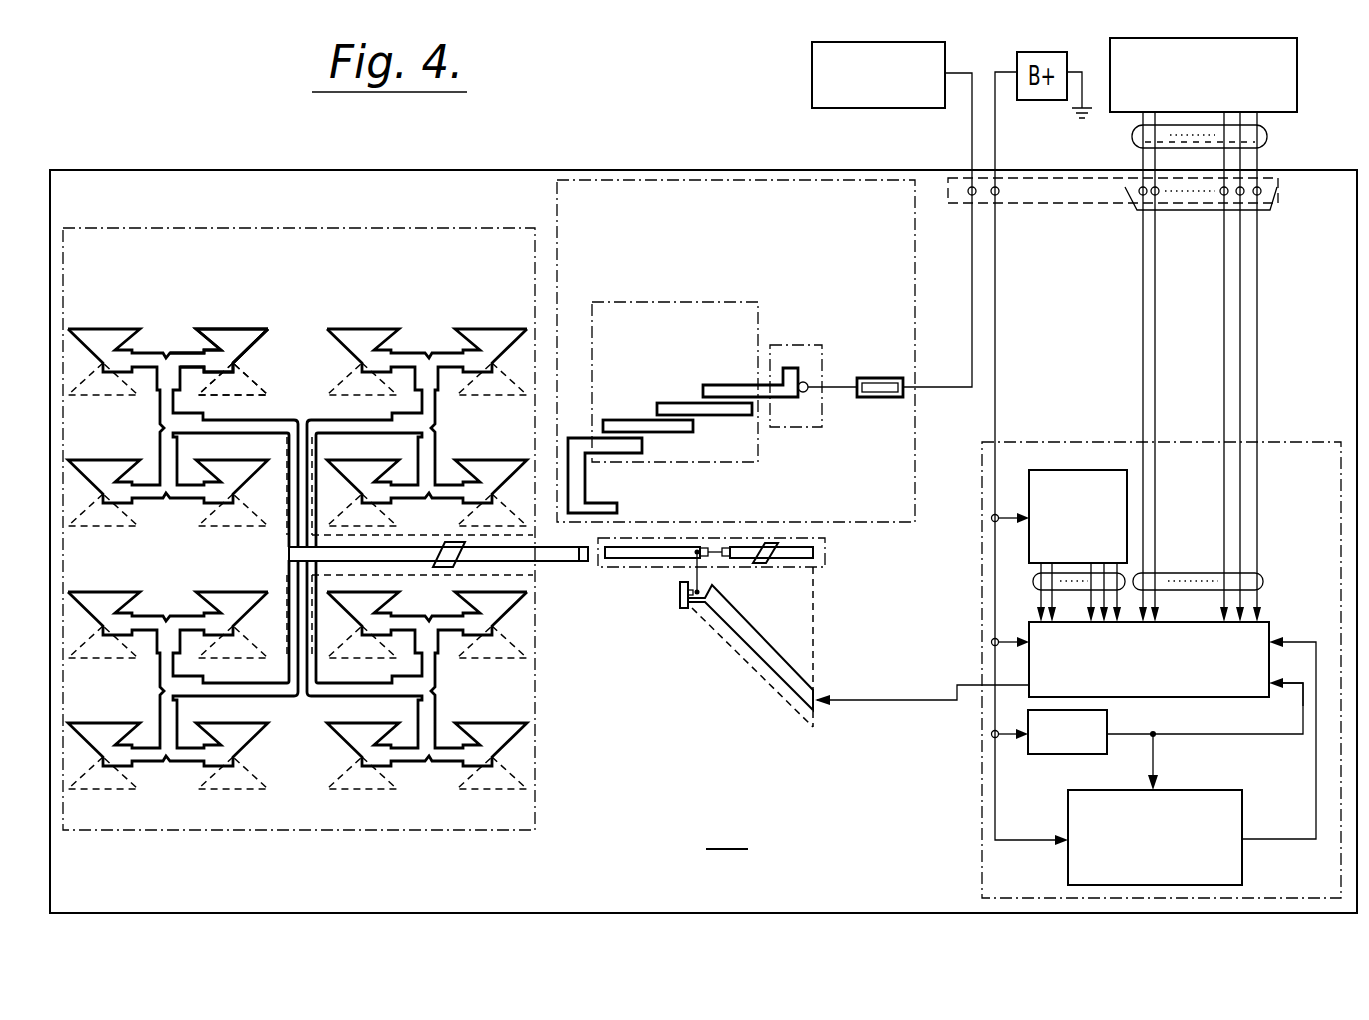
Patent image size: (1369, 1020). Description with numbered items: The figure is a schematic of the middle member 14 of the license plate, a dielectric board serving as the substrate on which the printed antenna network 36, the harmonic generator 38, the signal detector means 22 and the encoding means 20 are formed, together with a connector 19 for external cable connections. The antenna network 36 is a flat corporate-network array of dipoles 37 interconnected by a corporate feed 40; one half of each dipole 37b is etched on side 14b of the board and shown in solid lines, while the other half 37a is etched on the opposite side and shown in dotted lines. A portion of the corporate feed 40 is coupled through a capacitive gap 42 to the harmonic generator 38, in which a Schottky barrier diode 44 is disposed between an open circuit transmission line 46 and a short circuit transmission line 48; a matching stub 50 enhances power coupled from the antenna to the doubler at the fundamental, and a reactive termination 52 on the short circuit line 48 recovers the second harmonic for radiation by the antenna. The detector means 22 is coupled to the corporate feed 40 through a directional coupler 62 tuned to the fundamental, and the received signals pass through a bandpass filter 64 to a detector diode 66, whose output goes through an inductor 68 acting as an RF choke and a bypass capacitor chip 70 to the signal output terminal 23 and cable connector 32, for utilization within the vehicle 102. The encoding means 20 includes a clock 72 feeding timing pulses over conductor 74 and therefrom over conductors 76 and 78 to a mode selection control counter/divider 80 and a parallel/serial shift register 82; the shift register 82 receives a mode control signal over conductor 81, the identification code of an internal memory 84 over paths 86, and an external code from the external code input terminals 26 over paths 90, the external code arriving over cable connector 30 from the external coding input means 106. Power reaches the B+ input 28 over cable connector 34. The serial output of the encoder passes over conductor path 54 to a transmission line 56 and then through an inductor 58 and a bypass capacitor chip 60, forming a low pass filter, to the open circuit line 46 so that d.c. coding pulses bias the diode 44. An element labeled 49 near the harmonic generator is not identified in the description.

The member 14 is at (546, 162).
The side of member 14b is at (727, 832).
The connector 19 is at (1280, 190).
The encoding means 20 is at (1288, 486).
The signal detector means 22 is at (716, 218).
The signal output terminal 23 is at (968, 196).
The external code input terminal 26 is at (1190, 212).
The B+ input 28 is at (998, 196).
The cable connector 30 is at (1270, 138).
The cable connector 32 is at (972, 142).
The cable connector 34 is at (995, 140).
The antenna network 36 is at (311, 268).
The dipole 37 is at (240, 326).
The other half of dipole 37a is at (252, 380).
The one-half of dipole 37b is at (264, 338).
The harmonic generator 38 is at (825, 541).
The corporate feed 40 is at (550, 563).
The capacitive gap 42 is at (590, 566).
The diode 44 is at (717, 548).
The open circuit transmission line 46 is at (658, 550).
The short circuit transmission line 48 is at (787, 560).
The dashed boundary line 49 is at (822, 565).
The matching stub 50 is at (449, 545).
The reactive termination 52 is at (772, 545).
The conductor path 54 is at (885, 698).
The transmission line 56 is at (743, 630).
The inductor 58 is at (700, 576).
The capacitor chip 60 is at (680, 590).
The directional coupler 62 is at (596, 500).
The bandpass filter 64 is at (660, 339).
The detector diode 66 is at (806, 382).
The inductor 68 is at (810, 385).
The capacitor chip 70 is at (880, 400).
The clock 72 is at (1043, 756).
The conductor 74 is at (1133, 712).
The conductor 76 is at (1158, 770).
The conductor 78 is at (1303, 712).
The mode selection control counter/divider 80 is at (1243, 860).
The conductor 81 is at (1316, 780).
The parallel/serial shift register 82 is at (1262, 630).
The internal memory 84 is at (1080, 470).
The paths 86 is at (1033, 584).
The paths 90 is at (1263, 574).
The subscribing vehicle 102 is at (812, 70).
The external coding input means 106 is at (1300, 74).